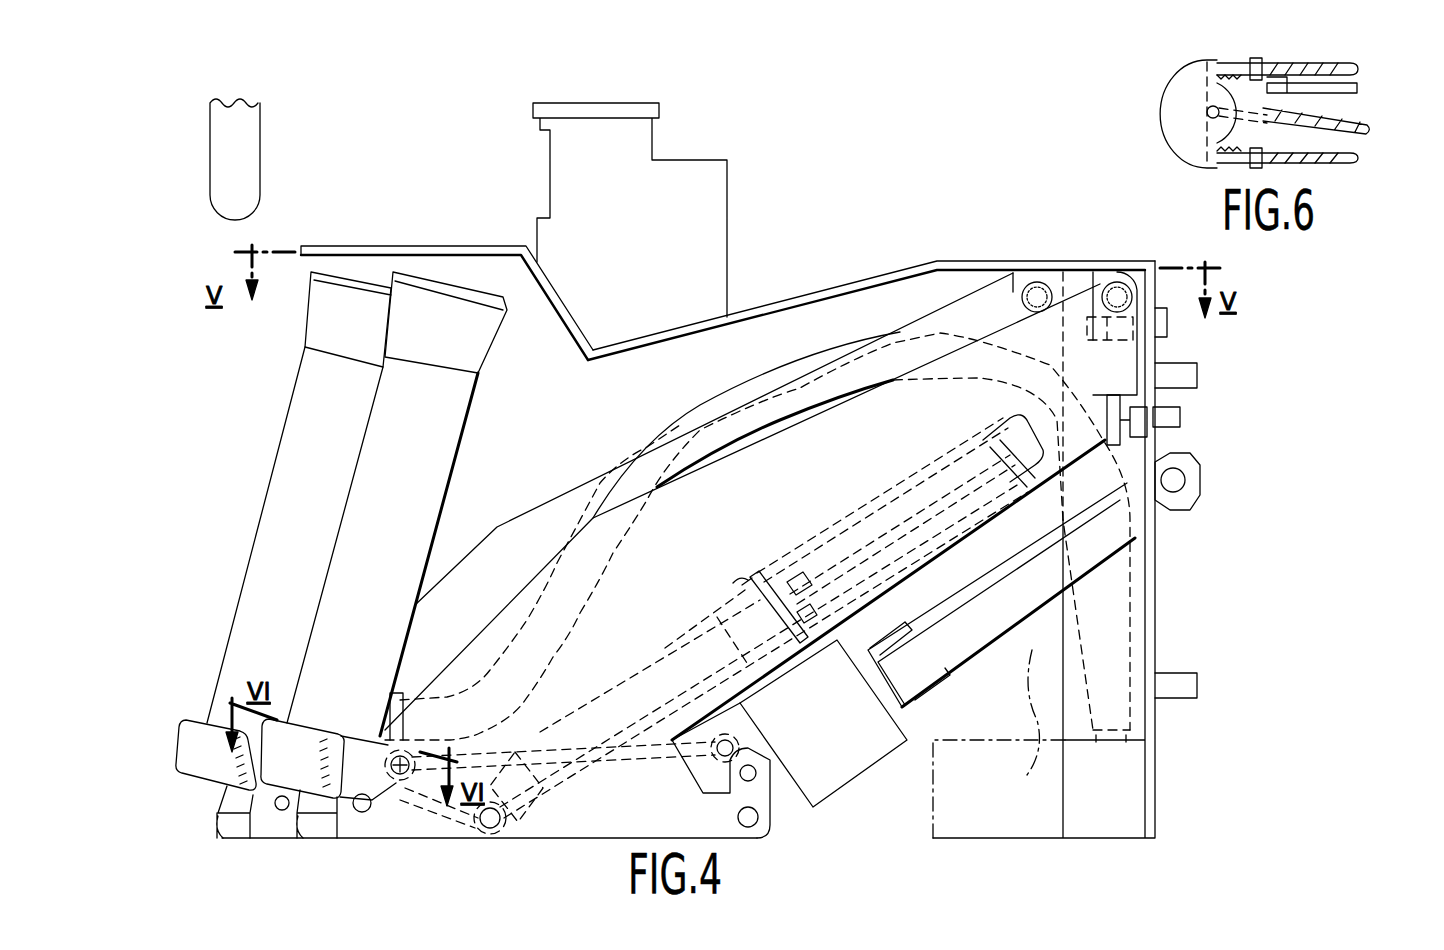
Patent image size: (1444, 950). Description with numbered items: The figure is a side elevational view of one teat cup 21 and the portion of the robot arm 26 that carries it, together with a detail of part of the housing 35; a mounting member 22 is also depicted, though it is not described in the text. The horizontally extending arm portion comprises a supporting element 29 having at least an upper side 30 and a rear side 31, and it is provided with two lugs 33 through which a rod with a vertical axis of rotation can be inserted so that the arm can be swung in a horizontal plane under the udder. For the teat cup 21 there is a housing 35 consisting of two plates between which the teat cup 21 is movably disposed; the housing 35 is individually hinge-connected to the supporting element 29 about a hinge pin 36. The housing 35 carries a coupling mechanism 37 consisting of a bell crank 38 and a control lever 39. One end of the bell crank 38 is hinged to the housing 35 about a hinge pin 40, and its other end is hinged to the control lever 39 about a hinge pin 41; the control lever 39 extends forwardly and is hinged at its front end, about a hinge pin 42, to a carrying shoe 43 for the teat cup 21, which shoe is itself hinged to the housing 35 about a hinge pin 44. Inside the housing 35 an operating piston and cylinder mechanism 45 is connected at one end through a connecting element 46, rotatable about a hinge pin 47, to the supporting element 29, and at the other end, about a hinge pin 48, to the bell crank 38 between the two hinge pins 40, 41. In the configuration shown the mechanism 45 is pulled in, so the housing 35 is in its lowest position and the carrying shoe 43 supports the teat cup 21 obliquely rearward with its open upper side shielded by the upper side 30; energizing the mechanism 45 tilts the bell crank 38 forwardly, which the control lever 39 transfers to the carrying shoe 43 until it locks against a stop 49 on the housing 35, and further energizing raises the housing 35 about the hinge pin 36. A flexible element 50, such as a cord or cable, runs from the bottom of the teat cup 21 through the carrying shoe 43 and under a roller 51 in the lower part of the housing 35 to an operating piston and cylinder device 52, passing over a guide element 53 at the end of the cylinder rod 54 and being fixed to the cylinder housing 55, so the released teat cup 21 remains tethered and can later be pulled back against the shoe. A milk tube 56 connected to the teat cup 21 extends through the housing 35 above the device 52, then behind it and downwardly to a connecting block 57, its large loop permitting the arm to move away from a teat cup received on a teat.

In FIG. 4, the teat cup 21 is at (288, 498).
In FIG. 4, the mounting block 22 is at (708, 230).
In FIG. 4, the robot arm 26 is at (969, 789).
In FIG. 4, the supporting element 29 is at (825, 290).
In FIG. 4, the upper side 30 is at (520, 252).
In FIG. 4, the rear side 31 is at (1158, 578).
In FIG. 4, the lugs 33 is at (1190, 378).
In FIG. 4, the housing 35 is at (545, 582).
In FIG. 6, the housing 35 is at (1358, 68).
In FIG. 4, the hinge pin 36 is at (1113, 290).
In FIG. 4, the coupling mechanism 37 is at (668, 766).
In FIG. 4, the bell crank 38 is at (735, 793).
In FIG. 4, the control lever 39 is at (580, 750).
In FIG. 6, the control lever 39 is at (1357, 88).
In FIG. 4, the hinge pin 40 is at (758, 817).
In FIG. 4, the hinge pin 41 is at (735, 745).
In FIG. 4, the hinge pin 42 is at (393, 748).
In FIG. 4, the carrying shoe 43 is at (198, 723).
In FIG. 6, the carrying shoe 43 is at (1180, 130).
In FIG. 4, the hinge pin 44 is at (282, 805).
In FIG. 4, the operating piston and cylinder mechanism 45 is at (898, 730).
In FIG. 4, the connecting element 46 is at (957, 632).
In FIG. 4, the hinge pin 47 is at (1177, 482).
In FIG. 4, the hinge pin 48 is at (752, 770).
In FIG. 4, the stop 49 is at (220, 815).
In FIG. 4, the flexible element 50 is at (877, 497).
In FIG. 6, the flexible element 50 is at (1368, 124).
In FIG. 4, the roller 51 is at (505, 830).
In FIG. 4, the operating piston and cylinder device 52 is at (665, 650).
In FIG. 4, the guide element 53 is at (985, 425).
In FIG. 4, the cylinder rod 54 is at (853, 550).
In FIG. 4, the cylinder housing 55 is at (625, 680).
In FIG. 4, the milk tube 56 is at (680, 422).
In FIG. 4, the connecting block 57 is at (1034, 699).